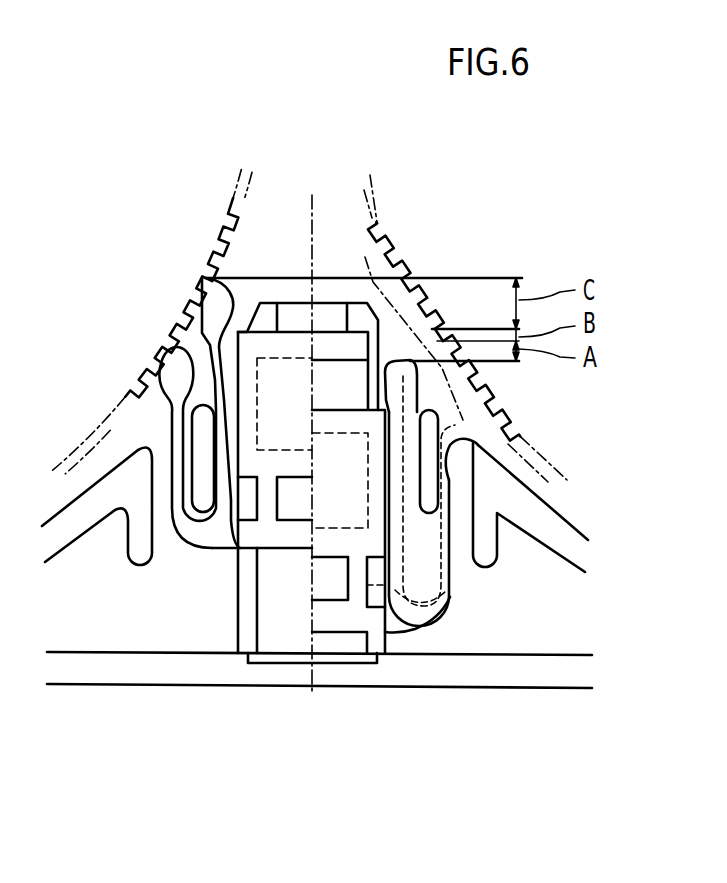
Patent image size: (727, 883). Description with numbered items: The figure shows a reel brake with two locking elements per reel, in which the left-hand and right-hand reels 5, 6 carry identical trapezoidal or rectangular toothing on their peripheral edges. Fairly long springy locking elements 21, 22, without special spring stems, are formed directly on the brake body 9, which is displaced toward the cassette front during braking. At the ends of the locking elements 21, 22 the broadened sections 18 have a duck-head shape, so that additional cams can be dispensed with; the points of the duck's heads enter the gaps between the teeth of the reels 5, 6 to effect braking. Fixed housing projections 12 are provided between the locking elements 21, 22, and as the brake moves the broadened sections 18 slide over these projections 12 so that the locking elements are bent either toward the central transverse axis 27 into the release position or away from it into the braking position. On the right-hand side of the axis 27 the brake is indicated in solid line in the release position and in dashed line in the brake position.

The left-hand reel 5 is at (90, 288).
The right-hand reel 6 is at (495, 194).
The brake body 9 is at (337, 623).
The housing projections 12 is at (200, 493).
The broadened sections 18 is at (203, 303).
The locking element 21 is at (413, 567).
The locking element 22 is at (452, 597).
The central transverse axis 27 is at (311, 231).